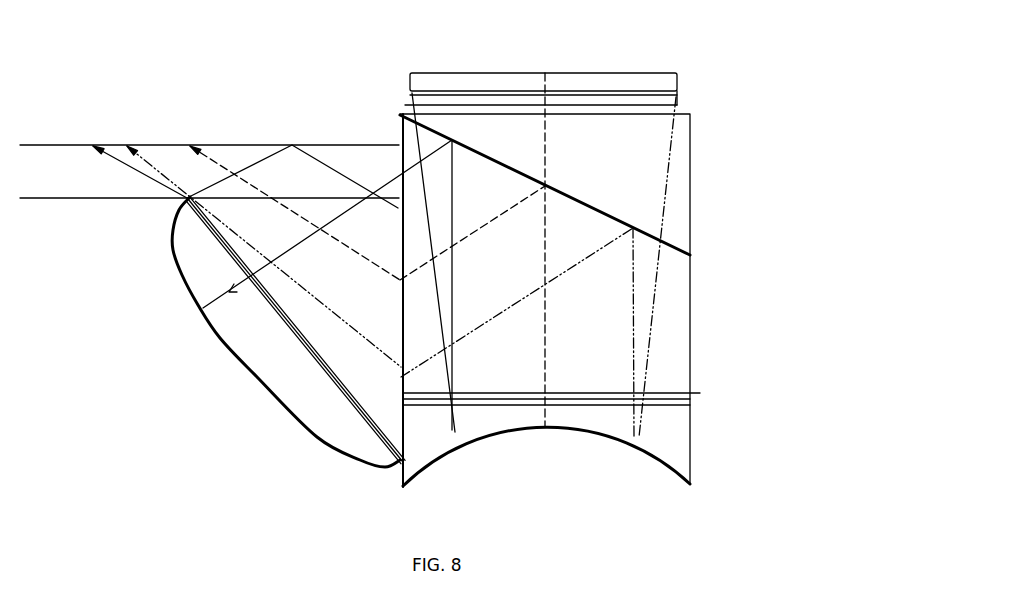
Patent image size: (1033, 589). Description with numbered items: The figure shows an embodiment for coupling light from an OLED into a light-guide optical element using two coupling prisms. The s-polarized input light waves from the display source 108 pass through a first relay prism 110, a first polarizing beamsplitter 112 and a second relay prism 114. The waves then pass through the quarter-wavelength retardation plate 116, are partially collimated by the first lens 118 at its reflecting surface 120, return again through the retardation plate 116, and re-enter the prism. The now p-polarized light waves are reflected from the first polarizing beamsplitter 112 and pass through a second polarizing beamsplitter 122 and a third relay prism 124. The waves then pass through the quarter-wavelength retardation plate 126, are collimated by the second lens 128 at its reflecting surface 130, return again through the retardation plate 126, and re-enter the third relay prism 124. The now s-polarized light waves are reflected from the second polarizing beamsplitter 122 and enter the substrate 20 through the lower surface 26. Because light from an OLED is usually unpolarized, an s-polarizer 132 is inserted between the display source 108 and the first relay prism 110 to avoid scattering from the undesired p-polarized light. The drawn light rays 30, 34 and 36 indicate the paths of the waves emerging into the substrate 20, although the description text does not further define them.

The substrate 20 is at (88, 181).
The lower surface 26 is at (117, 200).
The light ray 30 is at (195, 142).
The light ray 34 is at (97, 142).
The light ray 36 is at (138, 142).
The display source 108 is at (585, 72).
The first relay prism 110 is at (640, 155).
The first polarizing beamsplitter 112 is at (668, 240).
The second relay prism 114 is at (660, 332).
The quarter-wavelength retardation plate 116 is at (690, 393).
The first lens 118 is at (522, 412).
The reflecting surface 120 is at (606, 432).
The second polarizing beamsplitter 122 is at (398, 205).
The third relay prism 124 is at (247, 217).
The quarter-wavelength retardation plate 126 is at (413, 465).
The second lens 128 is at (325, 358).
The reflecting surface 130 is at (225, 347).
The s-polarizer 132 is at (676, 105).